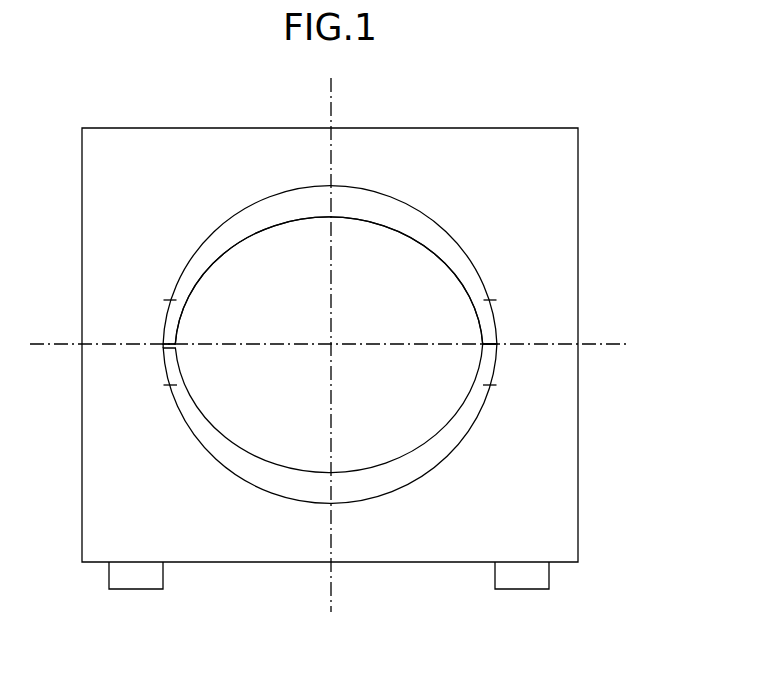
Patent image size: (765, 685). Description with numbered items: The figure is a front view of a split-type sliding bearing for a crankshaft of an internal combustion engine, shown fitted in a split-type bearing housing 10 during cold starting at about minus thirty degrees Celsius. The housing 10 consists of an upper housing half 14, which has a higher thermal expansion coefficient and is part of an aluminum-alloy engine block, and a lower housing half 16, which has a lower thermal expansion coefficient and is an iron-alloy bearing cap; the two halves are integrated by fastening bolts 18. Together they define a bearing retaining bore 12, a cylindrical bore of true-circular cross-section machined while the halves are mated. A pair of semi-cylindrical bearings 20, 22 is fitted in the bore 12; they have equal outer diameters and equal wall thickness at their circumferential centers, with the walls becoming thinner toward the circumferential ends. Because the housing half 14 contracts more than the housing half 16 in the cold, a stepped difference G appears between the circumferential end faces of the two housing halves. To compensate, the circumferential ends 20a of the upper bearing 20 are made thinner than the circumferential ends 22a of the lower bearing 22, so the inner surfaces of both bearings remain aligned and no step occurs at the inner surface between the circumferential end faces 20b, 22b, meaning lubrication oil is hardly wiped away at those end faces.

The split-type bearing housing 10 is at (466, 104).
The bearing retaining bore 12 is at (424, 228).
The housing half 14 is at (567, 236).
The housing half 16 is at (567, 454).
The fastening bolts 18 is at (136, 580).
The semi-cylindrical bearing 20 is at (243, 222).
The circumferential ends 20a is at (173, 312).
The circumferential end face 20b is at (183, 356).
The semi-cylindrical bearing 22 is at (240, 488).
The circumferential ends 22a is at (172, 386).
The circumferential end face 22b is at (475, 334).
The stepped difference G is at (152, 333).